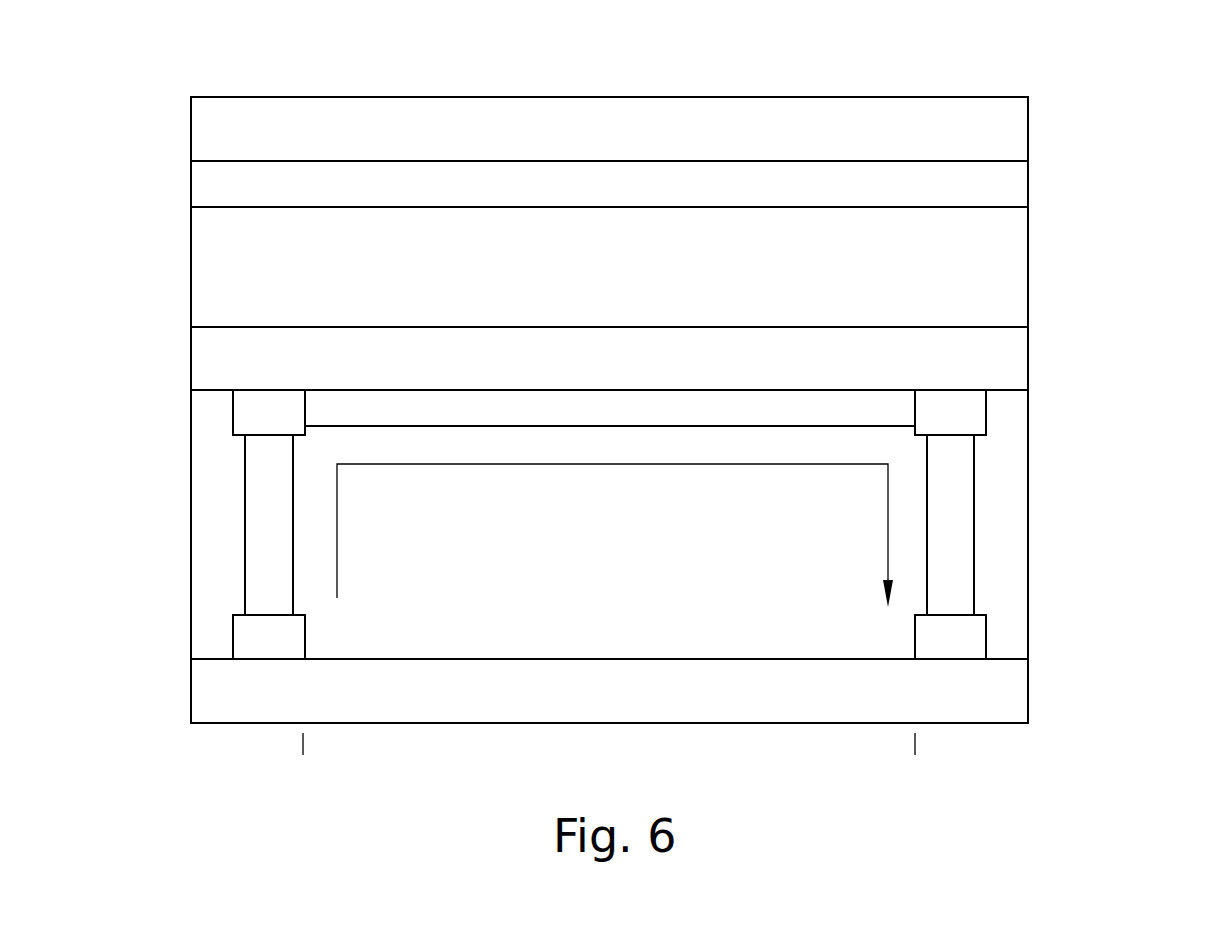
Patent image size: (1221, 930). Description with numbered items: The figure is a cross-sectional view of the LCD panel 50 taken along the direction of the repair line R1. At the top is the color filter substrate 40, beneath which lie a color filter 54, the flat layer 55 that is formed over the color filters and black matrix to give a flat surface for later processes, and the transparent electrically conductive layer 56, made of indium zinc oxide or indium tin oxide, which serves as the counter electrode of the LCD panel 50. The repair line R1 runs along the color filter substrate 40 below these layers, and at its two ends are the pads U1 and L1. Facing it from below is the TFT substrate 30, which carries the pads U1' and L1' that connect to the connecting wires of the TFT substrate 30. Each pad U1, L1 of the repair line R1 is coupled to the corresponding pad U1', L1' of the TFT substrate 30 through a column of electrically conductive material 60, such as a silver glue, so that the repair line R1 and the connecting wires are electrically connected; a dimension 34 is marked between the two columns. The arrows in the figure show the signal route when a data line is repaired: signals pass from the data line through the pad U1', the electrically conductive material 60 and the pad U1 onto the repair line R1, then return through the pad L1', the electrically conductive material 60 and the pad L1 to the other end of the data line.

The LCD panel 50 is at (1064, 120).
The color filter substrate 40 is at (595, 142).
The color filter 54 is at (595, 193).
The flat layer 55 is at (595, 302).
The transparent electrically conductive layer 56 is at (595, 368).
The TFT substrate 30 is at (595, 702).
The width 34 is at (304, 744).
The electrically conductive material 60 is at (253, 538).
The repair line R1 is at (340, 405).
The pad U1 is at (219, 412).
The pad L1 is at (1002, 412).
The pad U1' is at (210, 649).
The pad L1' is at (1018, 649).